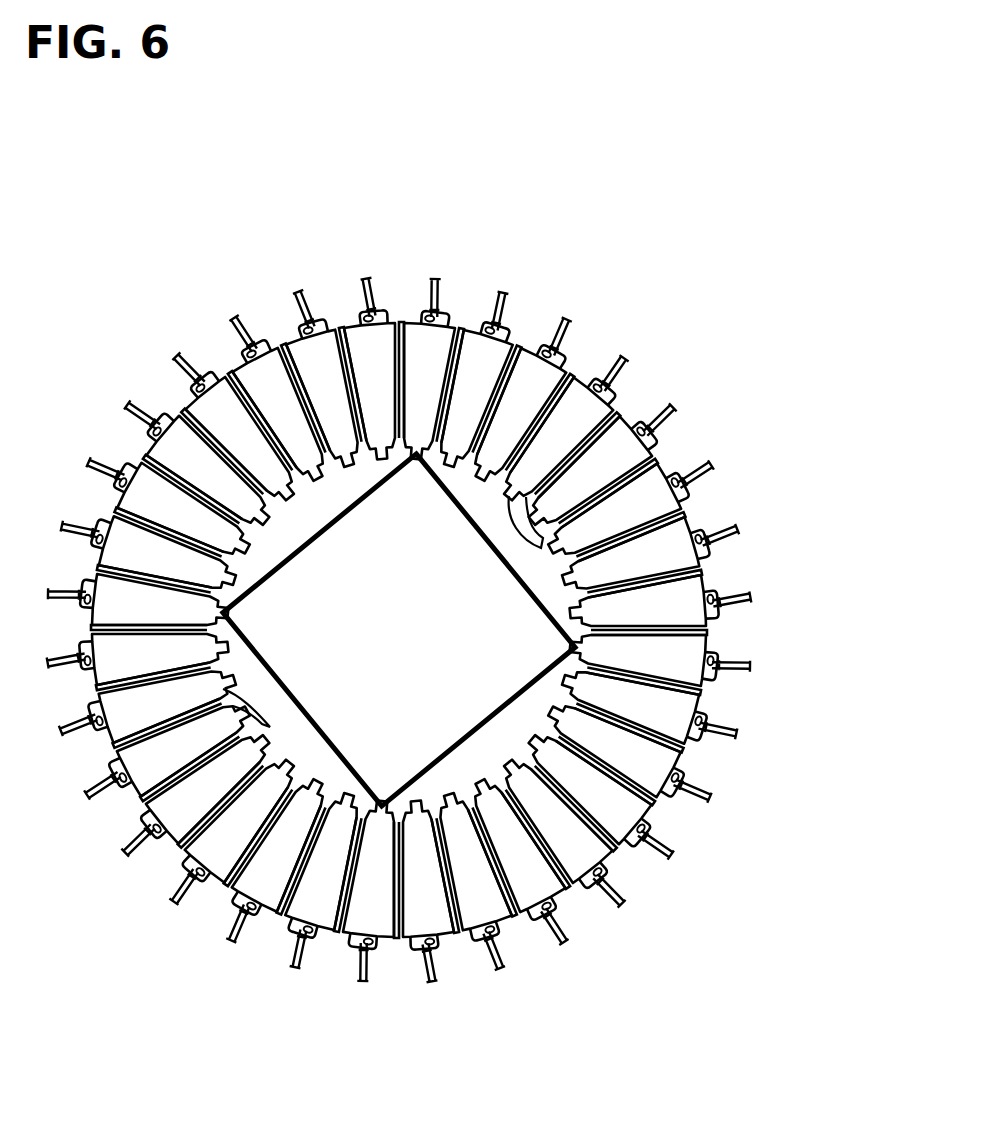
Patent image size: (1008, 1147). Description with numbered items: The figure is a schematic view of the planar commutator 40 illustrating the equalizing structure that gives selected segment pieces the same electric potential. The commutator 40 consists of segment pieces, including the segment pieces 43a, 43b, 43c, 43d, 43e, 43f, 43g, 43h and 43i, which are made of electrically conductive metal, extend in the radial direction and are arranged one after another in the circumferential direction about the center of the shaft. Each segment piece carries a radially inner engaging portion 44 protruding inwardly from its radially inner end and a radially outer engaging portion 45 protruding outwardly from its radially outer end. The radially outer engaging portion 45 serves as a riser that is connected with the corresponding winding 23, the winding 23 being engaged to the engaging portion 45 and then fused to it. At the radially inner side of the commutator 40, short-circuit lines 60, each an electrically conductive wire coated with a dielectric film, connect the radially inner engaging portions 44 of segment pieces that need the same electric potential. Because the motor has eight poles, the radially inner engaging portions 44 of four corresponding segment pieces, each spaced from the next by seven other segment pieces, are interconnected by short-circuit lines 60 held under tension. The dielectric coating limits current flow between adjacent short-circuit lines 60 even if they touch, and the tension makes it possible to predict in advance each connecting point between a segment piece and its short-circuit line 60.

The commutator 40 is at (273, 232).
The segment piece 43a is at (708, 644).
The segment piece 43b is at (702, 584).
The segment piece 43c is at (697, 524).
The segment piece 43d is at (661, 470).
The segment piece 43e is at (623, 424).
The segment piece 43f is at (573, 390).
The segment piece 43g is at (522, 368).
The segment piece 43h is at (465, 348).
The segment piece 43i is at (406, 335).
The radially inner engaging portion 44 is at (389, 622).
The radially outer engaging portion 45 is at (191, 395).
The winding 23 is at (740, 670).
The short-circuit line 60 is at (294, 554).